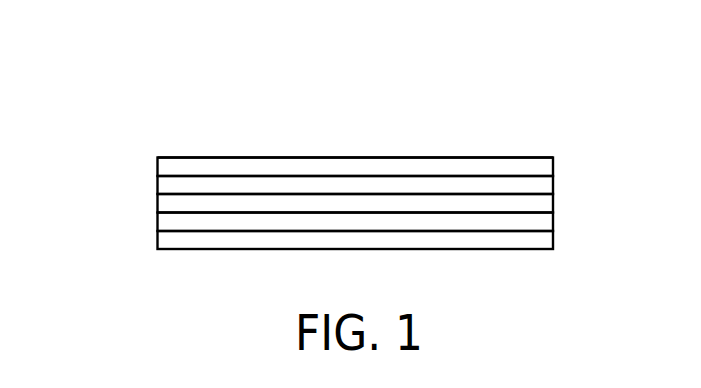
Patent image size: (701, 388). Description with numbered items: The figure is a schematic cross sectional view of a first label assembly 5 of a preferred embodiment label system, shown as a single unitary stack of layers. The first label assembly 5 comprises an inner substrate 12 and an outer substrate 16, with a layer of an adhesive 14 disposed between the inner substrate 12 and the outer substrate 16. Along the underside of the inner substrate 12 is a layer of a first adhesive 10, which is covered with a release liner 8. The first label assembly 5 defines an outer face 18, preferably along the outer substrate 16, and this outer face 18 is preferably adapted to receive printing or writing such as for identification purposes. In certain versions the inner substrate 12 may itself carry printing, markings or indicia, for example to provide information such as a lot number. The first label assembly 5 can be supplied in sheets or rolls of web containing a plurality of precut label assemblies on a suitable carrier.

The first label assembly 5 is at (97, 81).
The release liner 8 is at (553, 238).
The first adhesive 10 is at (553, 221).
The inner substrate 12 is at (553, 205).
The adhesive 14 is at (553, 184).
The outer substrate 16 is at (553, 165).
The outer face 18 is at (484, 157).